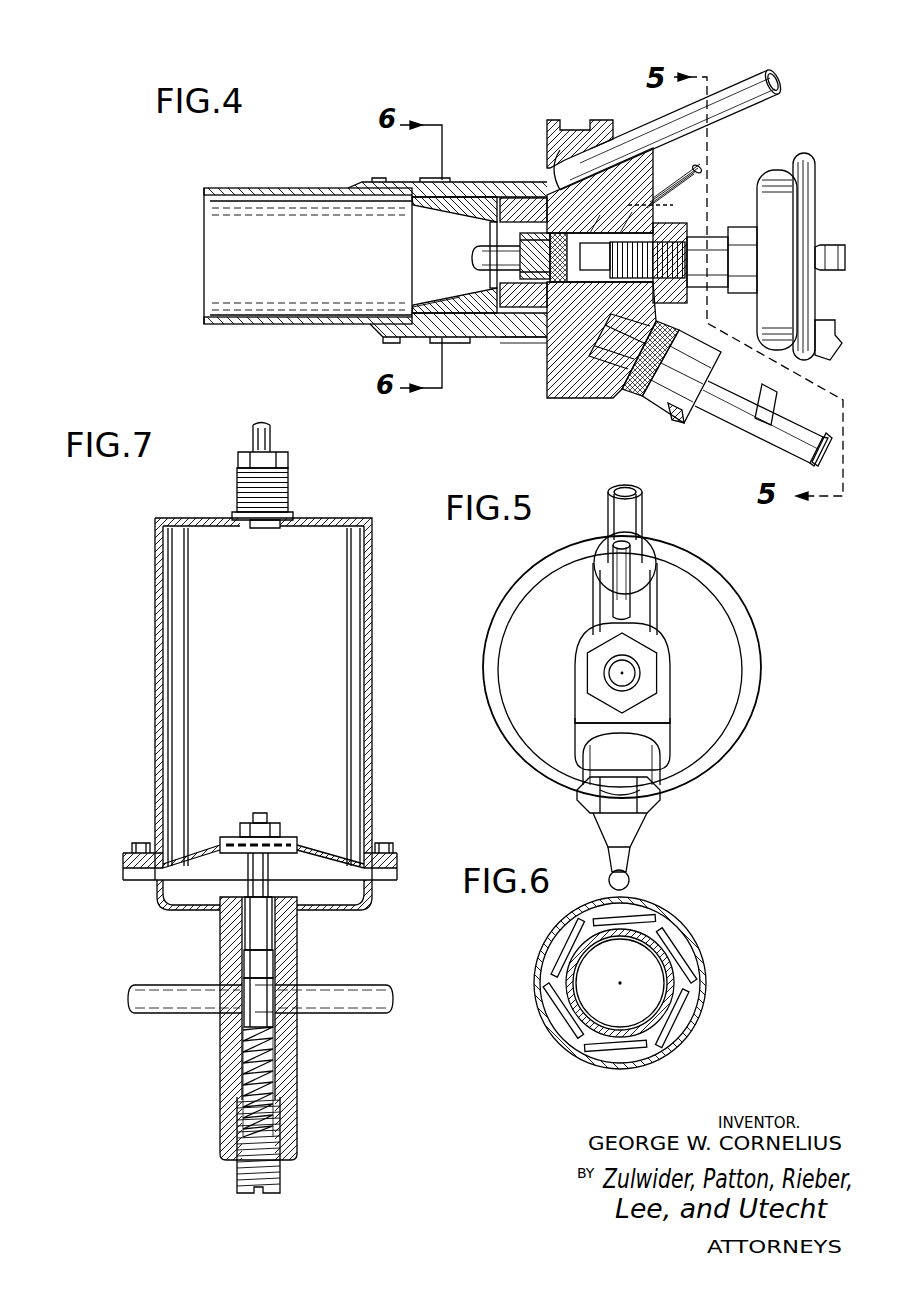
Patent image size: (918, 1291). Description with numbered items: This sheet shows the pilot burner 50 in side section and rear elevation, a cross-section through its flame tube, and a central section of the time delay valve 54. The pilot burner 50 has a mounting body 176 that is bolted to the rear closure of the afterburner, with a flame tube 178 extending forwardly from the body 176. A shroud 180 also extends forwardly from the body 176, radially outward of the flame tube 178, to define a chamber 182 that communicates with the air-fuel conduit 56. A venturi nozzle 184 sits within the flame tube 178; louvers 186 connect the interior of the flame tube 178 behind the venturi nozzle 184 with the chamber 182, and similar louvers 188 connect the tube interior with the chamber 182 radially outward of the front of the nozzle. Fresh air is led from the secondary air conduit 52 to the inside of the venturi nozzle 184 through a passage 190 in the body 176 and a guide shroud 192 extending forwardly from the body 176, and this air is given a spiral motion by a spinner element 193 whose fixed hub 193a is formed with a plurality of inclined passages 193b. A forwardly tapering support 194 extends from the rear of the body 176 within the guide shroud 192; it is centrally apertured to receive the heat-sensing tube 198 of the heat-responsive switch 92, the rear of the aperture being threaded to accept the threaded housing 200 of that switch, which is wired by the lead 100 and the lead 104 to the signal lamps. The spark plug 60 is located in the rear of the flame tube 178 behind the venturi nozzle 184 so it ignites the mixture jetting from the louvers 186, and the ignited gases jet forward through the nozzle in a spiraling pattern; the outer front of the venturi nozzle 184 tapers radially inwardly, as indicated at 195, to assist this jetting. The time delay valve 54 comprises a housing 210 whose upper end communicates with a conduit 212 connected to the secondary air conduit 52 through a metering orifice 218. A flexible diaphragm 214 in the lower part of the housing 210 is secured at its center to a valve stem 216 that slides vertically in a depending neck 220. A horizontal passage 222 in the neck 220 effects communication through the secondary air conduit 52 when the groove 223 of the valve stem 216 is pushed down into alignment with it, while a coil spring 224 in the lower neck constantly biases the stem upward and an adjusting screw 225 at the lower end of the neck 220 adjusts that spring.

In FIG. 4, the pilot burner 50 is at (308, 267).
In FIG. 5, the pilot burner 50 is at (757, 605).
In FIG. 6, the pilot burner 50 is at (690, 913).
In FIG. 4, the secondary air conduit 52 is at (700, 170).
In FIG. 7, the secondary air conduit 52 is at (363, 1013).
In FIG. 5, the secondary air conduit 52 is at (657, 546).
In FIG. 7, the time delay valve 54 is at (150, 667).
In FIG. 4, the air-fuel conduit 56 is at (758, 72).
In FIG. 5, the air-fuel conduit 56 is at (637, 515).
In FIG. 4, the spark plug 60 is at (680, 427).
In FIG. 5, the spark plug 60 is at (655, 822).
In FIG. 4, the heat-responsive switch 92 is at (818, 158).
In FIG. 4, the lead 100 is at (825, 352).
In FIG. 4, the lead 104 is at (846, 186).
In FIG. 4, the mounting body 176 is at (548, 400).
In FIG. 4, the flame tube 178 is at (258, 187).
In FIG. 6, the flame tube 178 is at (685, 973).
In FIG. 4, the shroud 180 is at (403, 340).
In FIG. 4, the chamber 182 is at (402, 183).
In FIG. 6, the chamber 182 is at (688, 998).
In FIG. 4, the venturi nozzle 184 is at (443, 203).
In FIG. 6, the venturi nozzle 184 is at (675, 943).
In FIG. 4, the louvers 186 is at (523, 327).
In FIG. 6, the louvers 186 is at (688, 1017).
In FIG. 4, the louvers 188 is at (437, 330).
In FIG. 4, the passage 190 is at (666, 206).
In FIG. 4, the guide shroud 192 is at (490, 227).
In FIG. 4, the spinner element 193 is at (607, 208).
In FIG. 4, the hub 193a is at (527, 235).
In FIG. 4, the inclined passages 193b is at (523, 302).
In FIG. 4, the forwardly tapering support 194 is at (512, 276).
In FIG. 4, the inwardly tapering front portion 195 is at (413, 317).
In FIG. 4, the heat-sensing tube 198 is at (474, 258).
In FIG. 4, the threaded housing 200 is at (700, 250).
In FIG. 7, the housing 210 is at (193, 738).
In FIG. 7, the conduit 212 is at (267, 437).
In FIG. 7, the flexible diaphragm 214 is at (193, 855).
In FIG. 7, the valve stem 216 is at (278, 885).
In FIG. 7, the metering orifice 218 is at (290, 504).
In FIG. 7, the depending neck 220 is at (288, 952).
In FIG. 7, the horizontal passage 222 is at (282, 1000).
In FIG. 7, the groove 223 is at (245, 967).
In FIG. 7, the coil spring 224 is at (270, 1078).
In FIG. 7, the adjusting screw 225 is at (280, 1176).